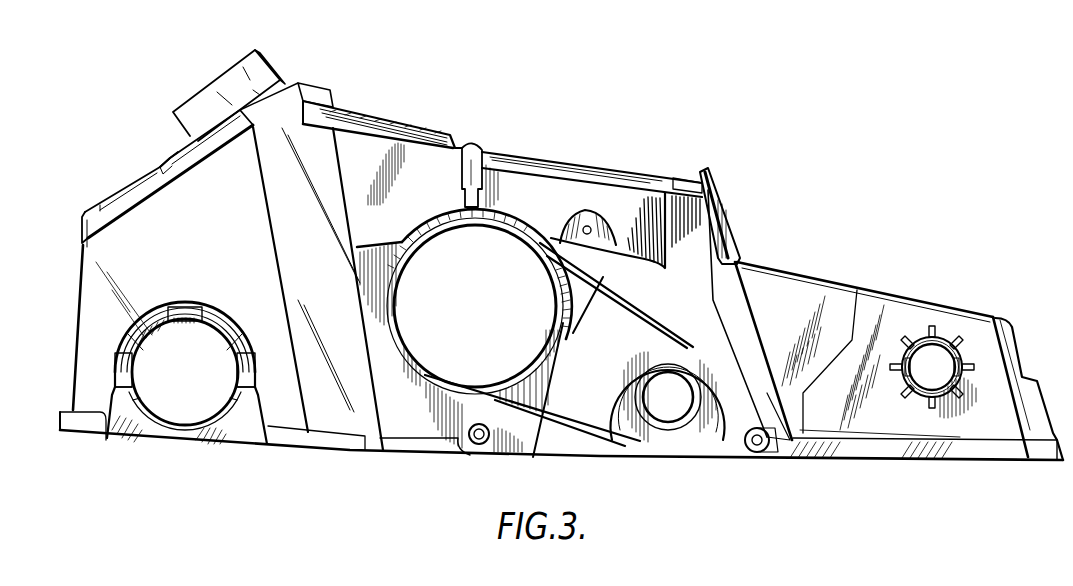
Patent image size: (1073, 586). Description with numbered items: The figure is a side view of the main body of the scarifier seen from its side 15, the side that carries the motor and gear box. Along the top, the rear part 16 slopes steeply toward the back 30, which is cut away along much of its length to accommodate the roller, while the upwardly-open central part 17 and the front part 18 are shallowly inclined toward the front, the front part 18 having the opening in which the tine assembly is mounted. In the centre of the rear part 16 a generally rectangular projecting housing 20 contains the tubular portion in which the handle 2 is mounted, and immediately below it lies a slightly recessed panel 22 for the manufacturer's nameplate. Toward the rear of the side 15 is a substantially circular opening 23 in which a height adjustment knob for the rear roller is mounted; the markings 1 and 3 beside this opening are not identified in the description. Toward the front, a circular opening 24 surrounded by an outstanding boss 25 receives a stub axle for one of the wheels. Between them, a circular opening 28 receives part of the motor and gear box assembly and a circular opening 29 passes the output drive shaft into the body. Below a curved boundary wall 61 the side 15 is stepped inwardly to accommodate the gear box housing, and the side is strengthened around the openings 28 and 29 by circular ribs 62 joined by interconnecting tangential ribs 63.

The bearing shell mark 1 is at (114, 372).
The handle 2 is at (185, 306).
The bearing shell mark 3 is at (257, 372).
The side 15 is at (737, 250).
The rear part 16 is at (177, 136).
The upwardly-open central part 17 is at (478, 137).
The front part 18 is at (882, 286).
The projecting housing 20 is at (227, 85).
The recessed panel 22 is at (142, 178).
The circular opening 23 is at (182, 398).
The circular opening 24 is at (932, 380).
The outstanding boss 25 is at (945, 350).
The circular opening 28 is at (478, 255).
The circular opening 29 is at (650, 390).
The back 30 is at (76, 254).
The curved boundary wall 61 is at (603, 277).
The circular ribs 62 is at (432, 390).
The tangential ribs 63 is at (647, 317).